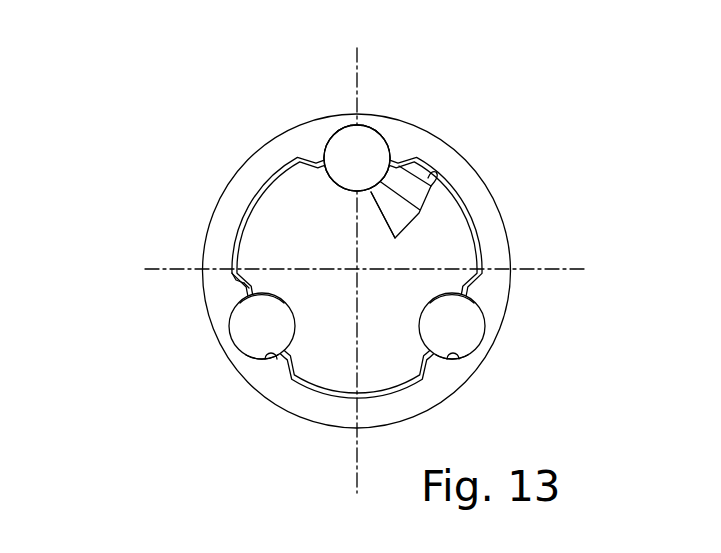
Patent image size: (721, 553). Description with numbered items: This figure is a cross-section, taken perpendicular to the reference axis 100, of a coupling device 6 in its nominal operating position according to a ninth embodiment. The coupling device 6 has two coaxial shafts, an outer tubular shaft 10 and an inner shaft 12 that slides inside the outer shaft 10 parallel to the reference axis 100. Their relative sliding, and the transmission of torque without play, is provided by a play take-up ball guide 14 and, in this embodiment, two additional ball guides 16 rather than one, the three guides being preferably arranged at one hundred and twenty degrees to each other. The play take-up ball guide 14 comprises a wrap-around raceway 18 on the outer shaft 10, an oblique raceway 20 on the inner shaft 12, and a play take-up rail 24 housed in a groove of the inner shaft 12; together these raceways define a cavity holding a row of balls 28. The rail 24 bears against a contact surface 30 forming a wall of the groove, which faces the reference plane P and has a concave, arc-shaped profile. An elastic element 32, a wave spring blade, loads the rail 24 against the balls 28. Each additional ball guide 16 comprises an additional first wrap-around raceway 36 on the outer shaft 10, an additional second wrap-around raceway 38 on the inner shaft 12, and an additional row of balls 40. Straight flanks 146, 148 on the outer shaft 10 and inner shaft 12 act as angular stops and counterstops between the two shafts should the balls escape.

The coupling device 6 is at (147, 178).
The play take-up ball guide 14 is at (242, 103).
The outer tubular shaft 10 is at (495, 247).
The inner shaft 12 is at (447, 228).
The reference axis 100 is at (355, 268).
The additional ball guide 16 is at (88, 384).
The wrap-around raceway 18 is at (345, 140).
The oblique raceway 20 is at (327, 140).
The balls 28 is at (367, 150).
The play take-up rail 24 is at (398, 192).
The contact surface 30 is at (428, 183).
The elastic element 32 is at (382, 210).
The additional first wrap-around raceway 36 is at (268, 350).
The additional second wrap-around raceway 38 is at (262, 299).
The additional balls 40 is at (258, 332).
The straight flank 146 is at (247, 288).
The straight flank 148 is at (238, 281).
The reference plane P is at (355, 487).